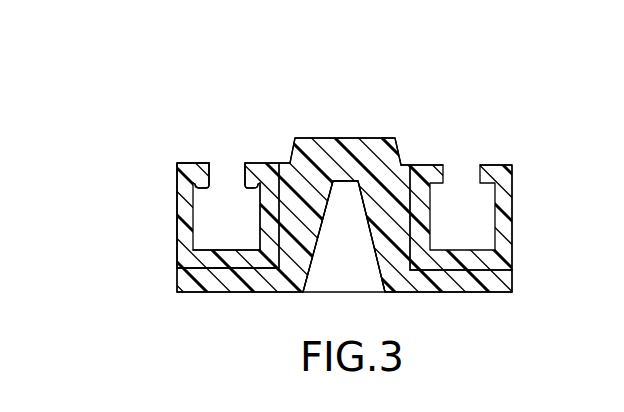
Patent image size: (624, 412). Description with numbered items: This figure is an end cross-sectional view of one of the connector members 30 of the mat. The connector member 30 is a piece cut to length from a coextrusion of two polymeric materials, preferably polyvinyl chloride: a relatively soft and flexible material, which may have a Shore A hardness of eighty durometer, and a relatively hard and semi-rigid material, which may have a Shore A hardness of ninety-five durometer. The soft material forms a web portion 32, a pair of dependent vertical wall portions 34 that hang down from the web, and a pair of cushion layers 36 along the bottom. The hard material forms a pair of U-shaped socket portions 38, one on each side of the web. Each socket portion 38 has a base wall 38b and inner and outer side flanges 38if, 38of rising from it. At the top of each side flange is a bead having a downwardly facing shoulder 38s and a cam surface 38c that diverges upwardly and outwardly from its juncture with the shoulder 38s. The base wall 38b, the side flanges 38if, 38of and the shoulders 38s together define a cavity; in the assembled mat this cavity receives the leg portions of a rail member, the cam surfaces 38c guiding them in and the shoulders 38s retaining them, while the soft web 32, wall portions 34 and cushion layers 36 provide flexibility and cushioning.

The connector member 30 is at (108, 104).
The web portion 32 is at (343, 183).
The dependent vertical wall portions 34 is at (312, 268).
The cushion layers 36 is at (205, 292).
The U-shaped socket portions 38 is at (178, 221).
The base wall 38b is at (222, 249).
The cam surface 38c is at (208, 163).
The inner side flange 38if is at (262, 224).
The outer side flange 38of is at (177, 173).
The downwardly facing shoulder 38s is at (242, 191).